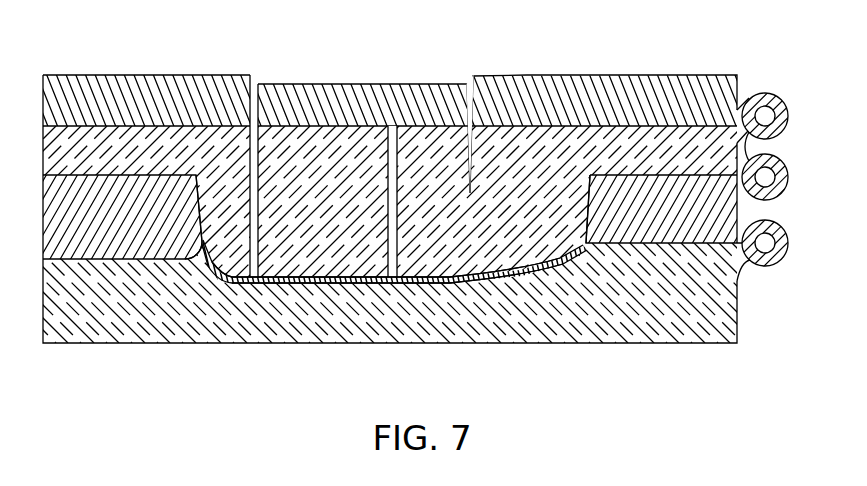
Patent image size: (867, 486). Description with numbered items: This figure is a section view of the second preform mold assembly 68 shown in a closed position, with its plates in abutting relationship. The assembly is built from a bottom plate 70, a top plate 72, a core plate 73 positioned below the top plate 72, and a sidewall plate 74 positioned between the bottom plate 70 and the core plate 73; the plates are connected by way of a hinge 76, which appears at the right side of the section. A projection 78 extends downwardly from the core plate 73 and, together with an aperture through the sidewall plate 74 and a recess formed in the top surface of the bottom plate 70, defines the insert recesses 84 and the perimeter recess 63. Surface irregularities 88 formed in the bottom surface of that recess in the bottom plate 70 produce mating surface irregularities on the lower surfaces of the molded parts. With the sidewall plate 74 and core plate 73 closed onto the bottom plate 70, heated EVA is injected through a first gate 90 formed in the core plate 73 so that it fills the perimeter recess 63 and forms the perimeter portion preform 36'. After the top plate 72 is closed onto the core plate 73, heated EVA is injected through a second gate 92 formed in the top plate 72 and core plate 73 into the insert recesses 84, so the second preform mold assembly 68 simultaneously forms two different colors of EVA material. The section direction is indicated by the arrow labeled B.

The second preform mold assembly 68 is at (636, 356).
The bottom plate 70 is at (649, 312).
The top plate 72 is at (649, 115).
The core plate 73 is at (649, 162).
The sidewall plate 74 is at (649, 225).
The hinge 76 is at (762, 252).
The projection 78 is at (484, 243).
The insert recesses 84 is at (256, 283).
The surface irregularities 88 is at (318, 275).
The first gate 90 is at (397, 177).
The second gate 92 is at (260, 177).
The perimeter recess 63 is at (205, 246).
The perimeter portion preform 36' is at (392, 293).
The section indicator B is at (254, 65).